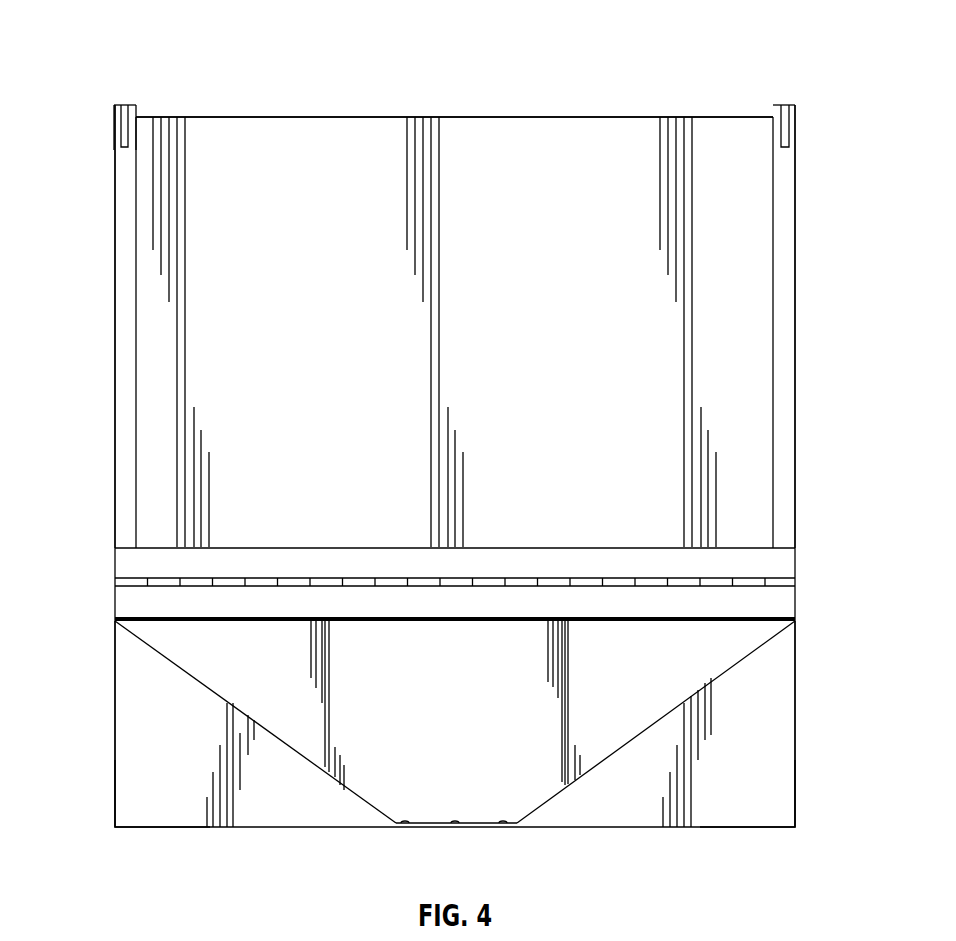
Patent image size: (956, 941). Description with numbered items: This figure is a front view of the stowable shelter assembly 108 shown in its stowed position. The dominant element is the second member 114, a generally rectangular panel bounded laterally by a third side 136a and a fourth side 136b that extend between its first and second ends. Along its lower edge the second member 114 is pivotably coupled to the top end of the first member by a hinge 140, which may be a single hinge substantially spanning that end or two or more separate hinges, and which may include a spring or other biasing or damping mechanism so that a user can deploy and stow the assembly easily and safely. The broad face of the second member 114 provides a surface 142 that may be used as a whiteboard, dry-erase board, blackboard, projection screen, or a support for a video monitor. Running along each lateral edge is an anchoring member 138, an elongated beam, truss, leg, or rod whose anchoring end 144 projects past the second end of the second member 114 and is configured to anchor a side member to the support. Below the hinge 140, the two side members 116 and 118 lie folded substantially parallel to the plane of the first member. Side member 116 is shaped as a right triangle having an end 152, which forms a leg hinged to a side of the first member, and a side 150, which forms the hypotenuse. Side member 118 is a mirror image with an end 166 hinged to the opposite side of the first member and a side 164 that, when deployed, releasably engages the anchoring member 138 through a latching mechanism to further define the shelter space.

The stowable shelter assembly 108 is at (128, 104).
The second member 114 is at (798, 320).
The side member 116 is at (786, 745).
The side member 118 is at (122, 745).
The third side 136a is at (797, 202).
The fourth side 136b is at (113, 332).
The anchoring member 138 is at (115, 113).
The hinge 140 is at (115, 580).
The surface 142 is at (505, 349).
The anchoring end 144 is at (773, 115).
The side 150 is at (663, 716).
The end 152 is at (793, 812).
The side 164 is at (222, 700).
The end 166 is at (118, 810).